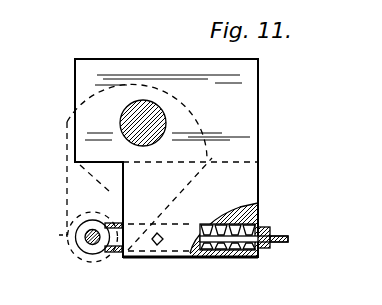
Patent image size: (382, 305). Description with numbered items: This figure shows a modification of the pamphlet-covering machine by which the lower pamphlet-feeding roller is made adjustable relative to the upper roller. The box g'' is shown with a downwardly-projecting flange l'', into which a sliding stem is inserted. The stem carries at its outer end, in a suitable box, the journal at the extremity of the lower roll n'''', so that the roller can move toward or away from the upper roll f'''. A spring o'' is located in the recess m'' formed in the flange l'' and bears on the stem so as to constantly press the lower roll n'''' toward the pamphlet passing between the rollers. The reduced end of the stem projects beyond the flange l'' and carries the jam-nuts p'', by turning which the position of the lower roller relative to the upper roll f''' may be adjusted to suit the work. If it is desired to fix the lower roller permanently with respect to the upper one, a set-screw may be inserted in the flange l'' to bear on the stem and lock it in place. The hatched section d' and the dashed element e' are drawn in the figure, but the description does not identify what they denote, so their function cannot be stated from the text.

The hatched pin / shaft section d' is at (153, 123).
The box g'' is at (162, 158).
The downwardly-projecting flange l'' is at (190, 179).
The upper roll f''' is at (146, 204).
The guide slot lines e' is at (160, 223).
The lower roll n'''' is at (117, 247).
The spring o'' is at (239, 242).
The recess m'' is at (244, 253).
The jam-nuts p'' is at (280, 225).